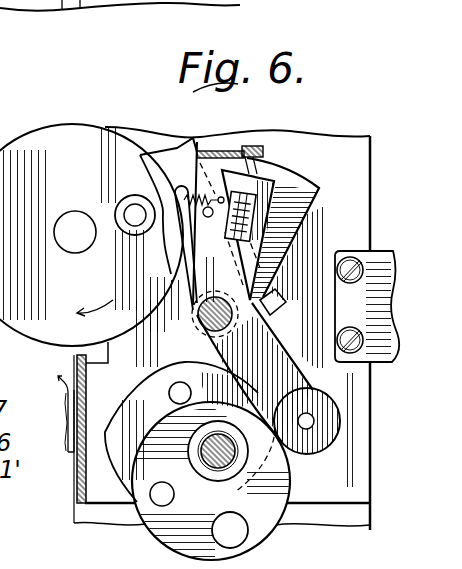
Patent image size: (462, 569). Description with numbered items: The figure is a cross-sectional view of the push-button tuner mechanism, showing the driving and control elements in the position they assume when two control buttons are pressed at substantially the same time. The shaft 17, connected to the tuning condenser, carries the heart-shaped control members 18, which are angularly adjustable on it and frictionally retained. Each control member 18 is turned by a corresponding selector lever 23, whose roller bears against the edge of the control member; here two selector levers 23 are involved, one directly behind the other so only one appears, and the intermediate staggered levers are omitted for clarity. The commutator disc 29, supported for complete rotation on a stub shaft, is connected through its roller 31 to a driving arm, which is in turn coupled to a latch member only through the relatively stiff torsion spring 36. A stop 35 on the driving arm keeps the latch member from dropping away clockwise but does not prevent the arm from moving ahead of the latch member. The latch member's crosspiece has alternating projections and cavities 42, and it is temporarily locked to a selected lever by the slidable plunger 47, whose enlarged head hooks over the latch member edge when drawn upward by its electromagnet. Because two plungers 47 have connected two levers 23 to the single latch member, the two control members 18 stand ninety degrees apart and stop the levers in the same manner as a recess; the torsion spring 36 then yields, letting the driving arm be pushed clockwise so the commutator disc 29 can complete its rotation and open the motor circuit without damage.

The shaft 17 is at (215, 465).
The heart-shaped control member 18 is at (136, 401).
The selector lever 23 is at (282, 355).
The commutator disc 29 is at (50, 133).
The roller 31 is at (123, 201).
The stop 35 is at (281, 298).
The torsion spring 36 is at (185, 247).
The cavity 42 is at (226, 151).
The slidable plunger 47 is at (264, 153).